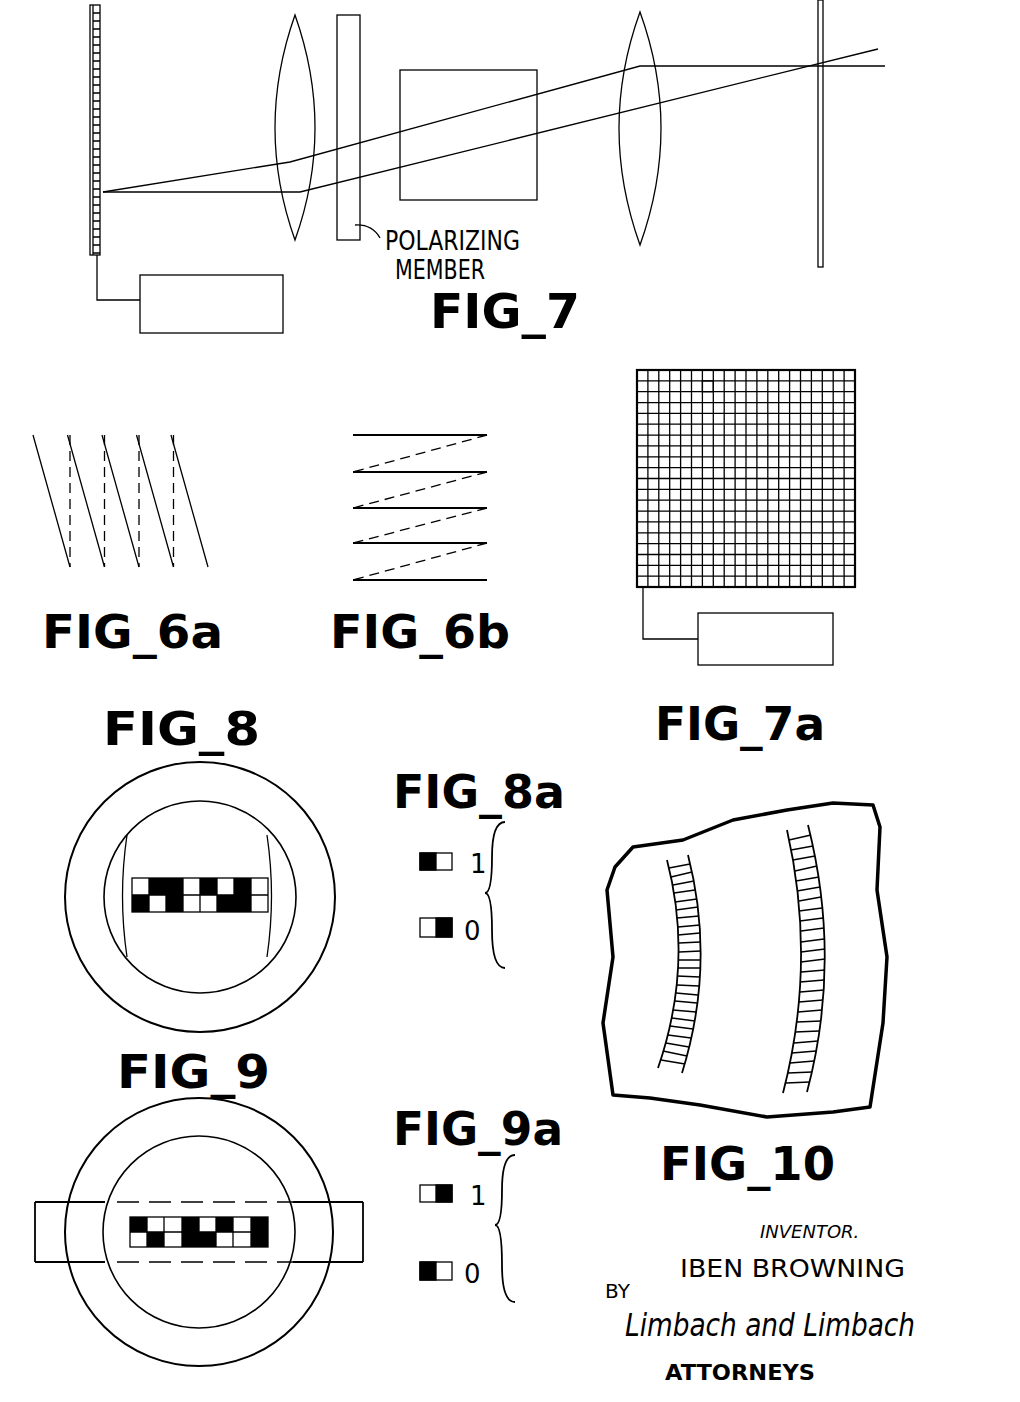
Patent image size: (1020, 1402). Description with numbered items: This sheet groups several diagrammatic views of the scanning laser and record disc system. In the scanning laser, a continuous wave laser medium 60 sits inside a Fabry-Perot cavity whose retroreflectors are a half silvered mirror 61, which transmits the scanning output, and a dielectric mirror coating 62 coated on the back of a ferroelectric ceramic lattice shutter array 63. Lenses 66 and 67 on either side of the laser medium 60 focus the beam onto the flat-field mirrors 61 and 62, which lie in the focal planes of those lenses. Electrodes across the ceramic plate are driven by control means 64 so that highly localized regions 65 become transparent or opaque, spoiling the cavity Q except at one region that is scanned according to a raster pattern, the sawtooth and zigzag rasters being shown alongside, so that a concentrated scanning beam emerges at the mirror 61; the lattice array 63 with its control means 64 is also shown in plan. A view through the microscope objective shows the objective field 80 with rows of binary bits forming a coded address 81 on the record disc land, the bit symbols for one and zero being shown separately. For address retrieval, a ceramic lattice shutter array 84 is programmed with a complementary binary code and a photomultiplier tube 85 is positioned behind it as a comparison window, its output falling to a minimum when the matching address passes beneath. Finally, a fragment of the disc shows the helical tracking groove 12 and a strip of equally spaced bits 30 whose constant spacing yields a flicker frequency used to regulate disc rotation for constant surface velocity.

In FIG. 7, the continuous wave laser medium 60 is at (465, 70).
In FIG. 7, the half silvered mirror 61 is at (826, 17).
In FIG. 7, the dielectric mirror coating 62 is at (88, 38).
In FIG. 7, the ferroelectric ceramic lattice shutter array 63 is at (101, 66).
In FIG. 7A, the ferroelectric ceramic lattice shutter array 63 is at (792, 380).
In FIG. 7, the control means 64 is at (283, 305).
In FIG. 7A, the control means 64 is at (833, 655).
In FIG. 7A, the localized regions 65 is at (708, 388).
In FIG. 7, the lens 66 is at (646, 34).
In FIG. 7, the lens 67 is at (290, 92).
In FIG. 8, the disc area 80 is at (246, 842).
In FIG. 8, the coded strip 81 is at (208, 906).
In FIG. 9, the ceramic lattice shutter array 84 is at (258, 1247).
In FIG. 9, the photomultiplier tube 85 is at (47, 1200).
In FIG. 10, the helical needle tracking groove 12 is at (836, 870).
In FIG. 10, the bits 30 is at (810, 933).